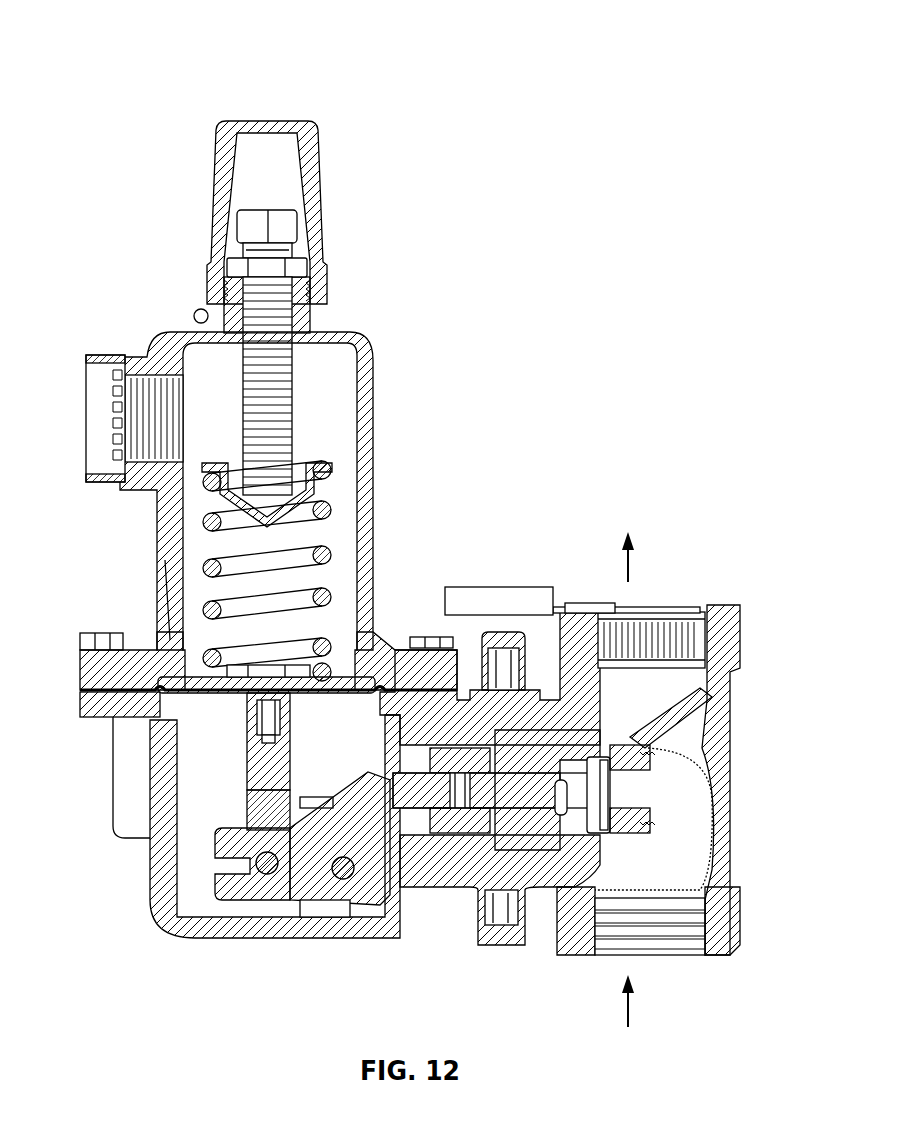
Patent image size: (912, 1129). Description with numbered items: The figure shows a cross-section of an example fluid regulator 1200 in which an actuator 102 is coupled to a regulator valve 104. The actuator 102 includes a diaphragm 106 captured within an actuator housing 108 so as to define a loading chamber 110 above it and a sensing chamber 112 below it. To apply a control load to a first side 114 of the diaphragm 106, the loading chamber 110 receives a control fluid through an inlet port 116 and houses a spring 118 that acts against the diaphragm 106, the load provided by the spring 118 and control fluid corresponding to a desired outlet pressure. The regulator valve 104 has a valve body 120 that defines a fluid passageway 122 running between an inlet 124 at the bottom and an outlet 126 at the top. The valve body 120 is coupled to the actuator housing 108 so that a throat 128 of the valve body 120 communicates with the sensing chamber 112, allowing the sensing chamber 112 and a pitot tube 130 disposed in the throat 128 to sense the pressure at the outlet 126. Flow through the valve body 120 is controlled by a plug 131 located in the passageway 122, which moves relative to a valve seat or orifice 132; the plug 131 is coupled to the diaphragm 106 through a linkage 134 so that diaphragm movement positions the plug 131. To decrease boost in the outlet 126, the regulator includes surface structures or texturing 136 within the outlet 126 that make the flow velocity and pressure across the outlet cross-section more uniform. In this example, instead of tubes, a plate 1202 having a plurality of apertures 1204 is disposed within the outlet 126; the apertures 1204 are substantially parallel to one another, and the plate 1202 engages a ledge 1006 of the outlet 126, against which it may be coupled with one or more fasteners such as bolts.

The regulator 1200 is at (132, 40).
The actuator 102 is at (374, 302).
The regulator valve 104 is at (488, 535).
The diaphragm 106 is at (173, 697).
The actuator housing 108 is at (165, 553).
The loading chamber 110 is at (235, 410).
The sensing chamber 112 is at (228, 788).
The first side of the diaphragm 114 is at (178, 610).
The inlet port 116 is at (135, 452).
The spring 118 is at (333, 553).
The valve body 120 is at (722, 920).
The fluid passageway 122 is at (683, 892).
The inlet 124 is at (718, 956).
The outlet 126 is at (707, 607).
The throat 128 is at (468, 857).
The pitot tube 130 is at (515, 587).
The plug 131 is at (602, 782).
The valve seat and/or orifice 132 is at (632, 826).
The linkage 134 is at (409, 840).
The surface structures and/or texturing 136 is at (718, 703).
The ledge 1006 is at (704, 620).
The plate 1202 is at (656, 602).
The apertures 1204 is at (622, 608).